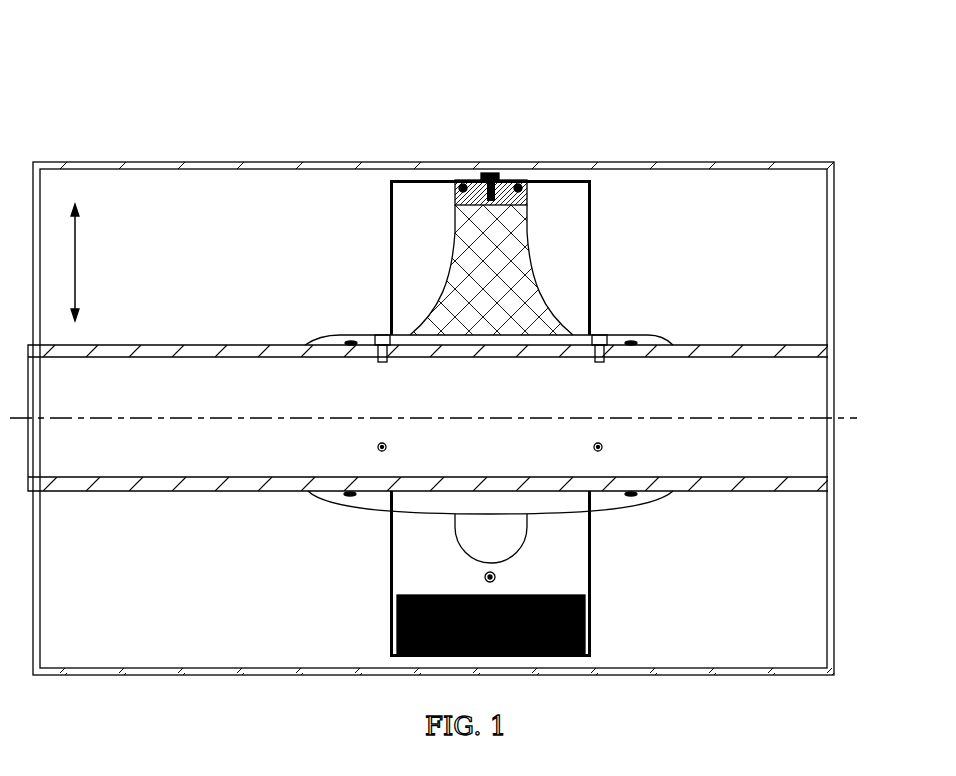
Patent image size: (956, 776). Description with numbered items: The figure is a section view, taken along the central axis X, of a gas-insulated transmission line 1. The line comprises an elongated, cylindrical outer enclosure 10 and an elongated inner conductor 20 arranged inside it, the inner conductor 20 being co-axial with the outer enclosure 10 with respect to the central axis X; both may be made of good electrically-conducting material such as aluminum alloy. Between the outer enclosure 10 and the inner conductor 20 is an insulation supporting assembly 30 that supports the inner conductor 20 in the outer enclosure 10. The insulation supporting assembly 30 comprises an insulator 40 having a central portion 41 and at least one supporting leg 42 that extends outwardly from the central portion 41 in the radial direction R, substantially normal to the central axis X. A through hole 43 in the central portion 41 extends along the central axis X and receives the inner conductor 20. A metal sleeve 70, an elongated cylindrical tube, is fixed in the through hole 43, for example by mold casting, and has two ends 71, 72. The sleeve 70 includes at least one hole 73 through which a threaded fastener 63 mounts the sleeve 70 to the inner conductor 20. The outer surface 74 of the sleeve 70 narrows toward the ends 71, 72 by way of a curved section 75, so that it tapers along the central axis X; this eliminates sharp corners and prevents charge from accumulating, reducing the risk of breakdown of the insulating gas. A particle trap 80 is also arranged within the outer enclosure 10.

The gas-insulated transmission line 1 is at (123, 112).
The outer enclosure 10 is at (752, 163).
The inner conductor 20 is at (753, 347).
The insulation supporting assembly 30 is at (355, 206).
The insulator 40 is at (524, 254).
The central portion 41 is at (506, 322).
The supporting leg 42 is at (500, 250).
The through hole 43 is at (503, 407).
The threaded fastener 63 is at (383, 334).
The sleeve 70 is at (344, 508).
The end 71 is at (306, 333).
The end 72 is at (685, 499).
The hole 73 is at (601, 370).
The outer surface 74 is at (475, 335).
The curved section 75 is at (648, 338).
The particle trap 80 is at (577, 547).